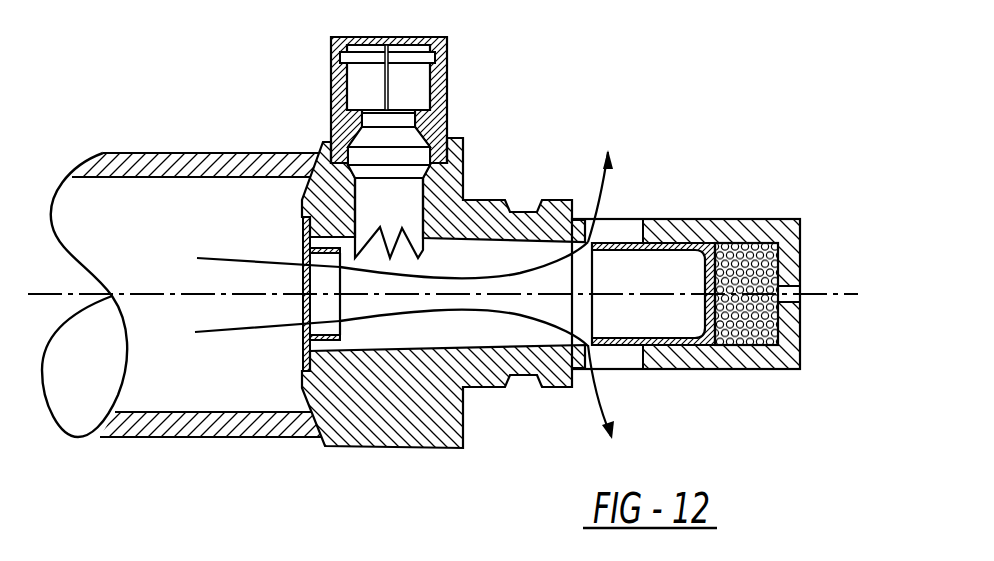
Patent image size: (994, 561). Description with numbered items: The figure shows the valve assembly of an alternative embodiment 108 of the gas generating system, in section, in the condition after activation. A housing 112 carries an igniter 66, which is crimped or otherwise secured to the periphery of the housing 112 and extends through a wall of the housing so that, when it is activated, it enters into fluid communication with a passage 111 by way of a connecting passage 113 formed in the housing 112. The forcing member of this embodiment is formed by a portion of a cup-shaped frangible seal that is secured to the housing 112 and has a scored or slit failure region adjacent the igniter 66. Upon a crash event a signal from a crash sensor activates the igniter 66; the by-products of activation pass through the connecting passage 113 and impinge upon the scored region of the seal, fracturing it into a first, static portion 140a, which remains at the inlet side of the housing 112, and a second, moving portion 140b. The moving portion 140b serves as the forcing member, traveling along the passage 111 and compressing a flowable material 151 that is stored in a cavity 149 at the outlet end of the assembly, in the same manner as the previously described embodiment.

The alternative embodiment of the gas generating system 108 is at (116, 112).
The connecting passage 113 is at (322, 168).
The igniter 66 is at (405, 160).
The housing 112 is at (487, 200).
The passage 111 is at (472, 338).
The static portion 140a is at (350, 353).
The moving portion 140b is at (673, 335).
The flowable material 151 is at (745, 226).
The cavity 149 is at (763, 318).